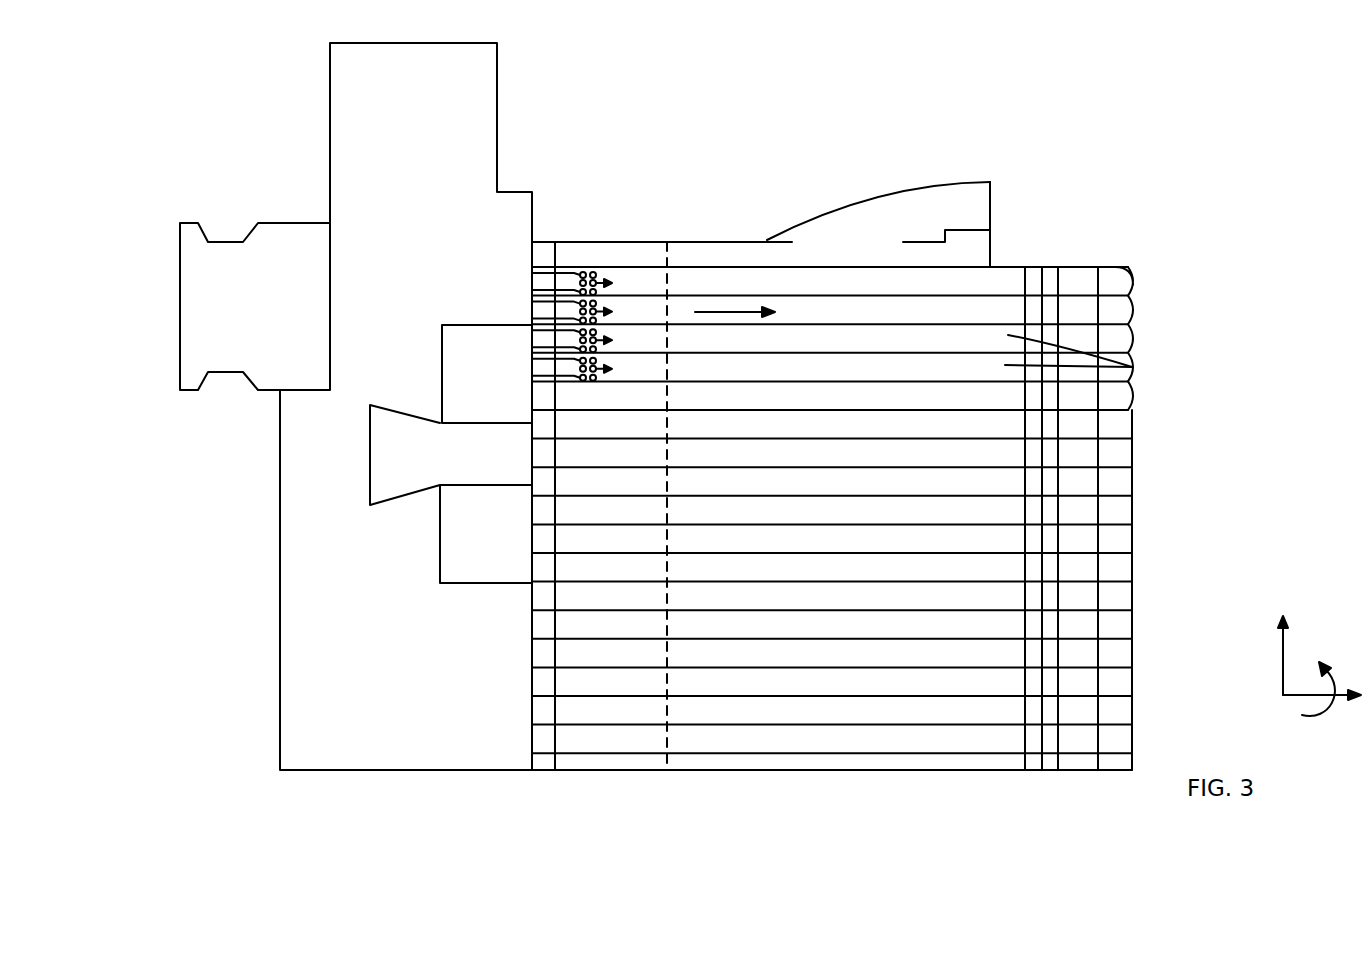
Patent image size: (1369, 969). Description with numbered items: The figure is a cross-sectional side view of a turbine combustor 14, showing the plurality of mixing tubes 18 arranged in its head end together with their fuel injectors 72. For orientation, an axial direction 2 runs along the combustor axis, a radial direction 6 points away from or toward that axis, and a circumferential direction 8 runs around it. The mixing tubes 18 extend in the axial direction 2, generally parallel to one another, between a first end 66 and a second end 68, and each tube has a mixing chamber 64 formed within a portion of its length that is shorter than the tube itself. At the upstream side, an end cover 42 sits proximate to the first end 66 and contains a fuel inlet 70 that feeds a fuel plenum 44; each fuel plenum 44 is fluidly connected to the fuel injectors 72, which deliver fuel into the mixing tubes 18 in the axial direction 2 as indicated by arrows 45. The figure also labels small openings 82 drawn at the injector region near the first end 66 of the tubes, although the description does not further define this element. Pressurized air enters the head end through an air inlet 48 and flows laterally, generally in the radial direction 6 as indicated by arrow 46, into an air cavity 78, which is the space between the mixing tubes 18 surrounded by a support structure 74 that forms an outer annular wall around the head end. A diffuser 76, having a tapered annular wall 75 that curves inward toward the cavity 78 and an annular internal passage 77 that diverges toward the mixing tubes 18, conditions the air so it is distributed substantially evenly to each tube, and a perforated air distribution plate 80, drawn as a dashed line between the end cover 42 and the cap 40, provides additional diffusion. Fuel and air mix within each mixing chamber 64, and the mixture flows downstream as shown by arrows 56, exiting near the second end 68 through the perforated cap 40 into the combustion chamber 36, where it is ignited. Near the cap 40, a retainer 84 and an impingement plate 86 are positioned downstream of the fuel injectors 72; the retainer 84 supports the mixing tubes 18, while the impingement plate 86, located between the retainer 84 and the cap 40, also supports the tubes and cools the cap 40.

The axial direction 2 is at (1283, 699).
The radial direction 6 is at (1283, 663).
The circumferential direction 8 is at (1333, 705).
The combustor 14 is at (1124, 70).
The mixing tube 18 is at (727, 273).
The combustion chamber 36 is at (867, 476).
The cap 40 is at (1100, 283).
The end cover 42 is at (377, 70).
The fuel plenum 44 is at (383, 463).
The arrows 45 is at (544, 367).
The arrow 46 is at (922, 210).
The air inlet 48 is at (857, 255).
The arrows 56 is at (730, 312).
The mixing chamber 64 is at (924, 324).
The first end 66 is at (520, 276).
The second end 68 is at (1140, 316).
The fuel inlet 70 is at (194, 298).
The fuel injector 72 is at (560, 310).
The support structure 74 is at (653, 240).
The tapered annular wall 75 is at (957, 183).
The diffuser 76 is at (875, 194).
The annular internal passage 77 is at (822, 226).
The air cavity 78 is at (816, 246).
The perforated air distribution plate 80 is at (667, 710).
The fuel injectors 82 is at (593, 273).
The retainer 84 is at (1032, 277).
The impingement plate 86 is at (1050, 274).